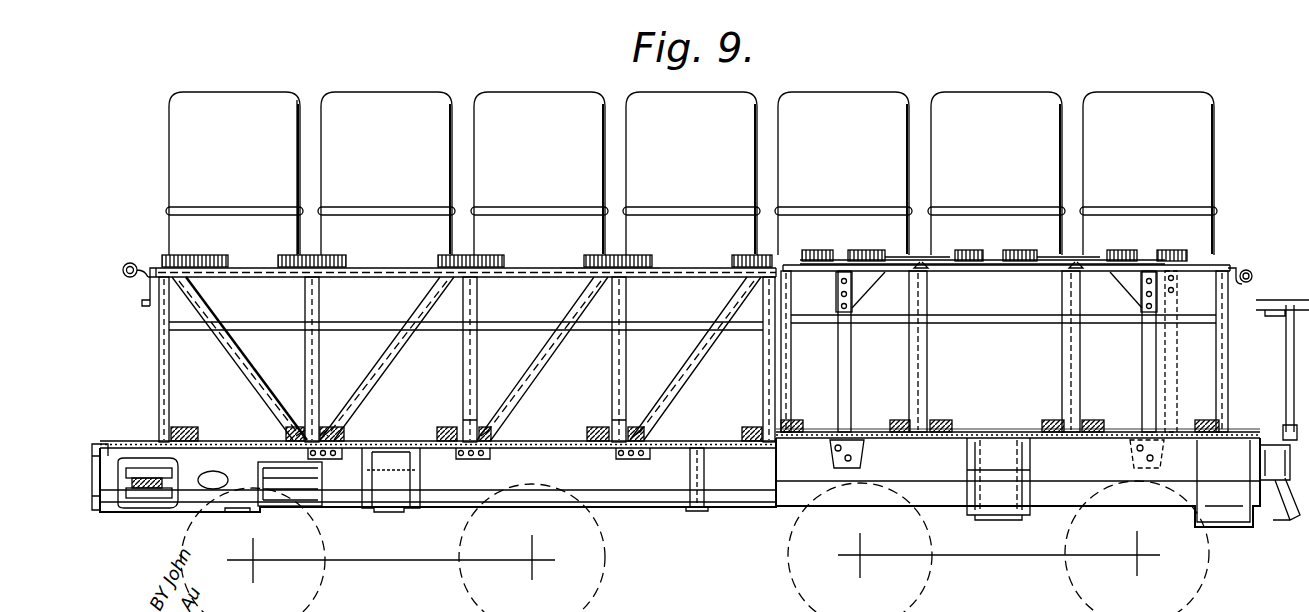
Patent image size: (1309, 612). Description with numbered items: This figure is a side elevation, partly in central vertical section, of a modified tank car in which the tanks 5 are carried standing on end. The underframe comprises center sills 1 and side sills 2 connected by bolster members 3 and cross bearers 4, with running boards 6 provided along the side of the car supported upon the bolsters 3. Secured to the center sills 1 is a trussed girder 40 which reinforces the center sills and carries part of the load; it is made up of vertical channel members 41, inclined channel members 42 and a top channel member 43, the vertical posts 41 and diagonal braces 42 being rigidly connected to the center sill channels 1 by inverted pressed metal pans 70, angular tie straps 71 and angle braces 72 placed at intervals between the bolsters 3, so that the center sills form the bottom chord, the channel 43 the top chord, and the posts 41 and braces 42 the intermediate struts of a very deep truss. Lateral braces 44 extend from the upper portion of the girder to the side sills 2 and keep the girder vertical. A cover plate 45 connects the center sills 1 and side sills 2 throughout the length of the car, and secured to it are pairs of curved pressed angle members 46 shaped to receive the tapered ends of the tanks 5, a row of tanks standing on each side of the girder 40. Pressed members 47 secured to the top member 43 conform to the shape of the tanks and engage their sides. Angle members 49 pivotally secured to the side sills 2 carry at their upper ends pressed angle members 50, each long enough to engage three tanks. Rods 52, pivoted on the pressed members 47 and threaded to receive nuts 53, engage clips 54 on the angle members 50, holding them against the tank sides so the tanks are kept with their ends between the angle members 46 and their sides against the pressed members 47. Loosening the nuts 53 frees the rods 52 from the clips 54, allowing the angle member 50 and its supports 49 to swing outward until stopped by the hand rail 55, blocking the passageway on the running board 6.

The center sills 1 is at (560, 490).
The side sills 2 is at (930, 525).
The bolster members 3 is at (420, 483).
The cross bearers 4 is at (706, 465).
The tanks 5 is at (691, 173).
The running boards 6 is at (988, 432).
The trussed girder 40 is at (718, 299).
The vertical channel members 41 is at (160, 376).
The inclined channel members 42 is at (240, 375).
The top channel member 43 is at (549, 270).
The lateral braces 44 is at (927, 361).
The cover plate 45 is at (236, 448).
The curved pressed angle members 46 is at (205, 417).
The pressed members 47 is at (202, 260).
The angle members 49 is at (853, 360).
The pressed angle members 50 is at (1010, 258).
The rods 52 is at (938, 258).
The nuts 53 is at (920, 262).
The clips 54 is at (935, 268).
The hand rail 55 is at (990, 272).
The inverted pressed metal pans 70 is at (335, 460).
The angular tie straps 71 is at (283, 415).
The angle braces 72 is at (464, 420).